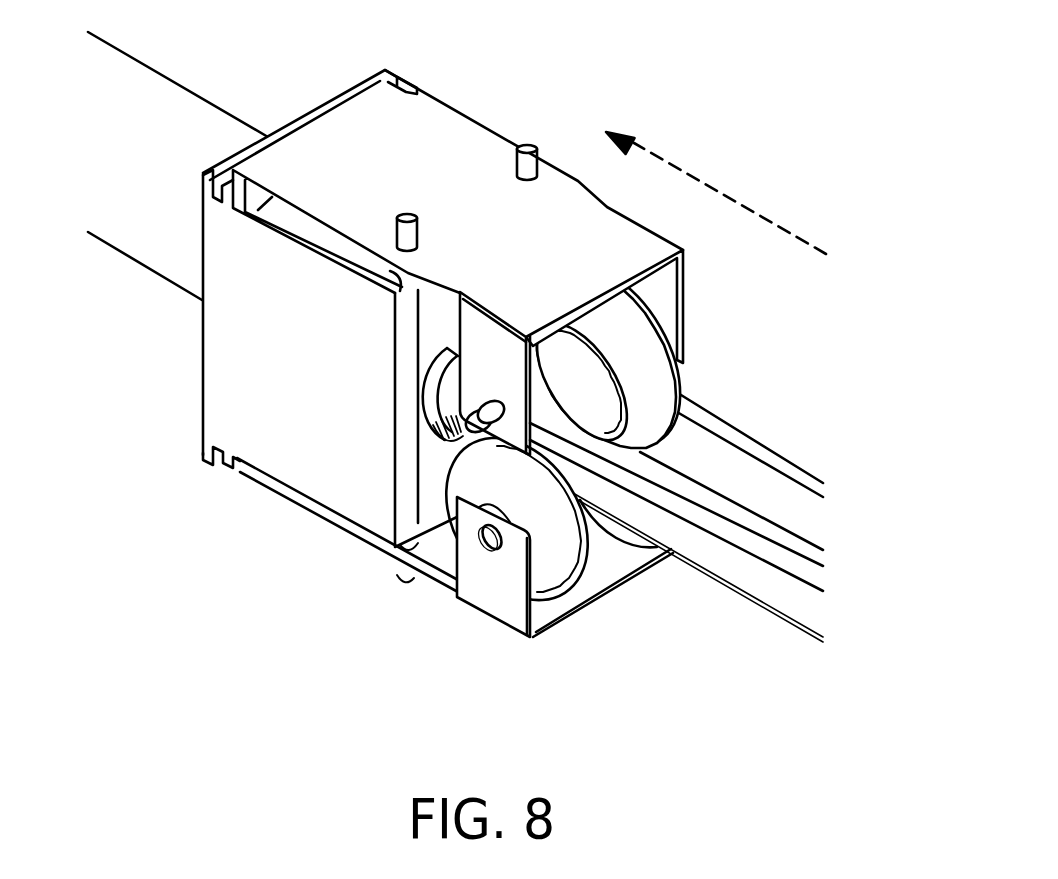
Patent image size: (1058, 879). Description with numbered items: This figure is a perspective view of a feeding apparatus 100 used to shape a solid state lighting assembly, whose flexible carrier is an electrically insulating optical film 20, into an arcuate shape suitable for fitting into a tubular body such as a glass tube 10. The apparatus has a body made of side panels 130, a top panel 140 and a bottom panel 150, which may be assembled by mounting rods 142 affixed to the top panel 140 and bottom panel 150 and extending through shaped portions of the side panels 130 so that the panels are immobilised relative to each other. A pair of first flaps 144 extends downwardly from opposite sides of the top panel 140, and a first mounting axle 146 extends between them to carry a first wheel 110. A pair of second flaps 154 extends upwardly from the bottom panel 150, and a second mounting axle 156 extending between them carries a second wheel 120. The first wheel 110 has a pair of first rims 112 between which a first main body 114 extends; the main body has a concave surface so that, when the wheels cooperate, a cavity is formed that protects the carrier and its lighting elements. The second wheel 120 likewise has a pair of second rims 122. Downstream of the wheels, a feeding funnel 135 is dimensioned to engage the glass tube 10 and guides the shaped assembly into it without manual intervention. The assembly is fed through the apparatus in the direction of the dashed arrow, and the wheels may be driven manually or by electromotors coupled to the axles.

The glass tube 10 is at (147, 245).
The electrically insulating optical film 20 is at (793, 607).
The feeding apparatus 100 is at (747, 151).
The first wheel 110 is at (560, 352).
The first rims 112 is at (644, 356).
The first main body 114 is at (630, 353).
The second wheel 120 is at (563, 577).
The second rims 122 is at (587, 587).
The side panels 130 is at (280, 449).
The feeding funnel 135 is at (437, 437).
The top panel 140 is at (455, 152).
The mounting rods 142 is at (530, 147).
The first flaps 144 is at (492, 356).
The first mounting axle 146 is at (481, 420).
The bottom panel 150 is at (345, 528).
The second flaps 154 is at (441, 601).
The second mounting axle 156 is at (483, 540).